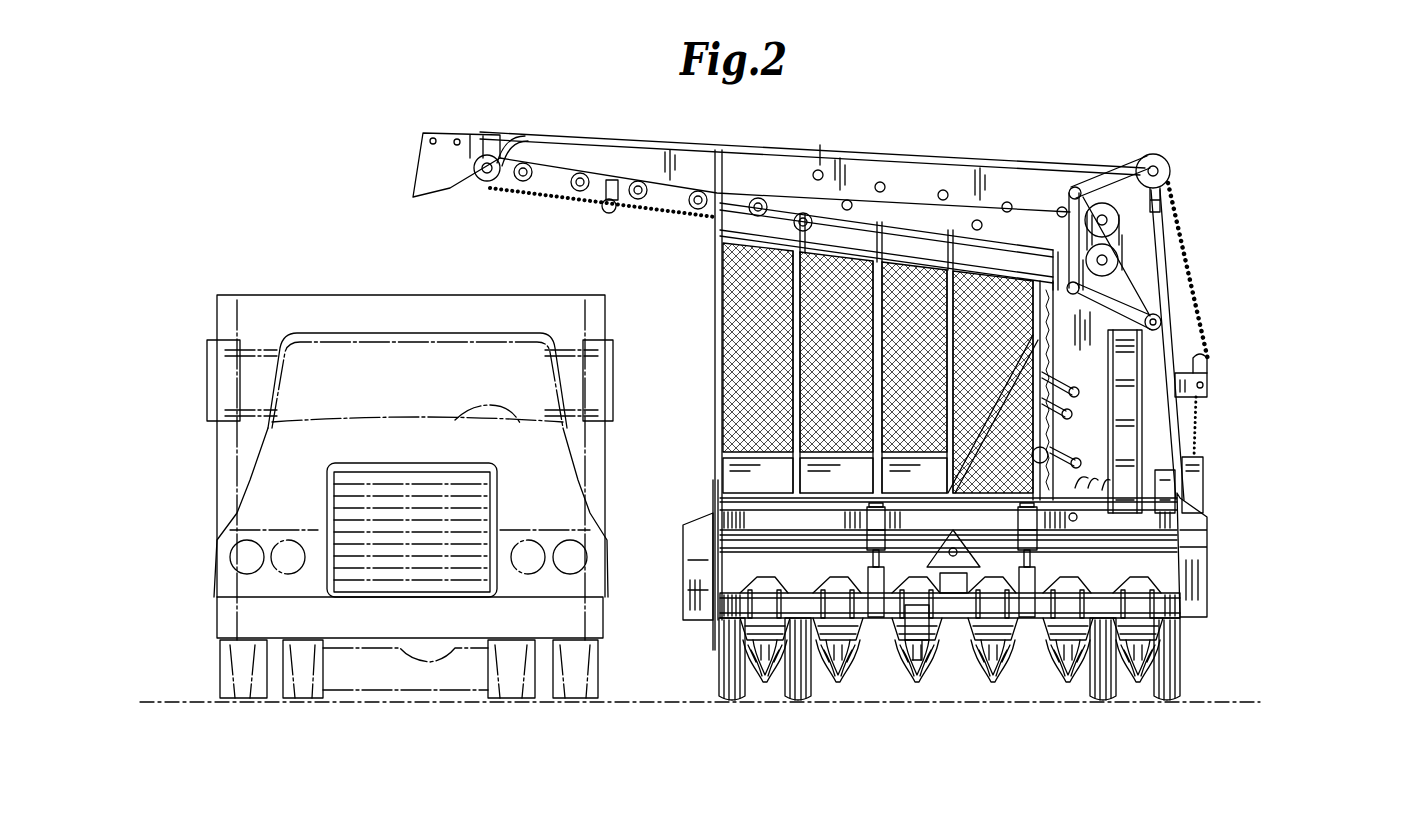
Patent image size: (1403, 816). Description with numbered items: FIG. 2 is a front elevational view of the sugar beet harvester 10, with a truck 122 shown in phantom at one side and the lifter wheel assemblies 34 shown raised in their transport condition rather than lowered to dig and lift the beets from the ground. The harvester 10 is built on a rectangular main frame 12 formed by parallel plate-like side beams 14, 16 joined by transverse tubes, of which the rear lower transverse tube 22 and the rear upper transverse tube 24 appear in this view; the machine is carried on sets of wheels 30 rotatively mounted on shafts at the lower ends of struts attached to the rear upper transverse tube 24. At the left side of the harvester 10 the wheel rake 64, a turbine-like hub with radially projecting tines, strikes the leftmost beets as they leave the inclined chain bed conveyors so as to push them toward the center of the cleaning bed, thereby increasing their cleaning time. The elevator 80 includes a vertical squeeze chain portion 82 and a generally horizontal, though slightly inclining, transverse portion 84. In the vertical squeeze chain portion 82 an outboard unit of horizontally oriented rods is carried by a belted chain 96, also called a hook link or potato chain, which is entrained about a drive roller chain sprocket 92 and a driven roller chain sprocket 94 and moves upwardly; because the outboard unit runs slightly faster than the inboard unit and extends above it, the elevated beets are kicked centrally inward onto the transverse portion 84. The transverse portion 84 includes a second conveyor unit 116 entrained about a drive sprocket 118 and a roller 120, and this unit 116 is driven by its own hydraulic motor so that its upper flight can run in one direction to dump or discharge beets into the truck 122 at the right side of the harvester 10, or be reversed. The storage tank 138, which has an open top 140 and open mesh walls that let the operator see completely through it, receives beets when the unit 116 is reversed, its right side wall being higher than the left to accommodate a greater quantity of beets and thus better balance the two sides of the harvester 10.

The sugar beet harvester 10 is at (900, 430).
The main frame 12 is at (680, 518).
The side beam 14 is at (685, 603).
The side beam 16 is at (1210, 547).
The rear lower transverse tube 22 is at (1160, 612).
The rear upper transverse tube 24 is at (1127, 523).
The wheels 30 is at (949, 682).
The lifter wheel assembly 34 is at (858, 680).
The wheel rake 64 is at (1118, 486).
The elevator 80 is at (1216, 312).
The vertical squeeze chain portion 82 is at (1212, 296).
The transverse portion 84 is at (527, 204).
The drive roller chain sprocket 92 is at (1165, 478).
The driven roller chain sprocket 94 is at (1161, 165).
The belted chain 96 is at (1181, 208).
The second conveyor unit 116 is at (632, 212).
The drive sprocket 118 is at (782, 215).
The roller 120 is at (487, 183).
The truck 122 is at (273, 292).
The storage tank 138 is at (752, 294).
The open top 140 is at (905, 258).